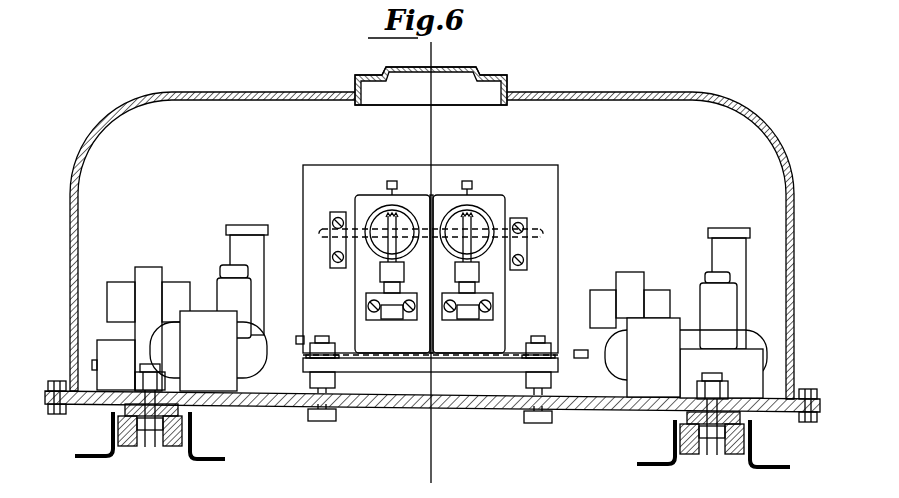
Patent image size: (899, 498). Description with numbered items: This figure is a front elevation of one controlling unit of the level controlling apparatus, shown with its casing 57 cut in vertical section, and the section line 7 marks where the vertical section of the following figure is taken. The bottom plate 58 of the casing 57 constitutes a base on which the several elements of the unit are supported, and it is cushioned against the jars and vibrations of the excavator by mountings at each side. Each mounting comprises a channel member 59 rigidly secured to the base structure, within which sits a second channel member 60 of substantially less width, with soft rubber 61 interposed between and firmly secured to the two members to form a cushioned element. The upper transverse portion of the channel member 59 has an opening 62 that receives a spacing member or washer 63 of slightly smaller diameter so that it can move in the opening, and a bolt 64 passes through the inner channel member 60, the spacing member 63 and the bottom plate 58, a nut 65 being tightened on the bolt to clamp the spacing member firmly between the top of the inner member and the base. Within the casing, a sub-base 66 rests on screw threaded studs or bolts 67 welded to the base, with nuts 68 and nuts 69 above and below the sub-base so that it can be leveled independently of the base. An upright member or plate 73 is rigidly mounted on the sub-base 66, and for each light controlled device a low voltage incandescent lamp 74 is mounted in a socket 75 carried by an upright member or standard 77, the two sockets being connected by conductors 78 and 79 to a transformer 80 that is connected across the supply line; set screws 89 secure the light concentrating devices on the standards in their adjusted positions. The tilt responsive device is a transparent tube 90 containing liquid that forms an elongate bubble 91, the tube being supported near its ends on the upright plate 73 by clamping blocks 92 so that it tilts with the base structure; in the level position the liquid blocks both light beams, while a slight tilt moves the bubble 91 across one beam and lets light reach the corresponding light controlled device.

The section line 7— 7 is at (432, 52).
The casing 57 is at (745, 118).
The bottom plate 58 is at (480, 404).
The channel member 59 is at (192, 428).
The second channel member 60 is at (158, 448).
The soft rubber 61 is at (128, 447).
The opening 62 is at (128, 390).
The spacing member or washer 63 is at (165, 410).
The bolt 64 is at (155, 365).
The nut 65 is at (165, 380).
The sub-base 66 is at (413, 372).
The screw threaded studs or bolts 67 is at (328, 343).
The nut 68 is at (337, 380).
The nut 69 is at (316, 345).
The upright member or plate 73 is at (548, 190).
The incandescent lamp 74 is at (383, 212).
The socket 75 is at (380, 290).
The upright member or standard 77 is at (355, 285).
The conductor 78 is at (475, 322).
The conductor 79 is at (304, 343).
The transformer 80 is at (437, 311).
The set screw 89 is at (392, 181).
The transparent tube 90 is at (530, 212).
The bubble 91 is at (436, 166).
The clamping block 92 is at (333, 215).